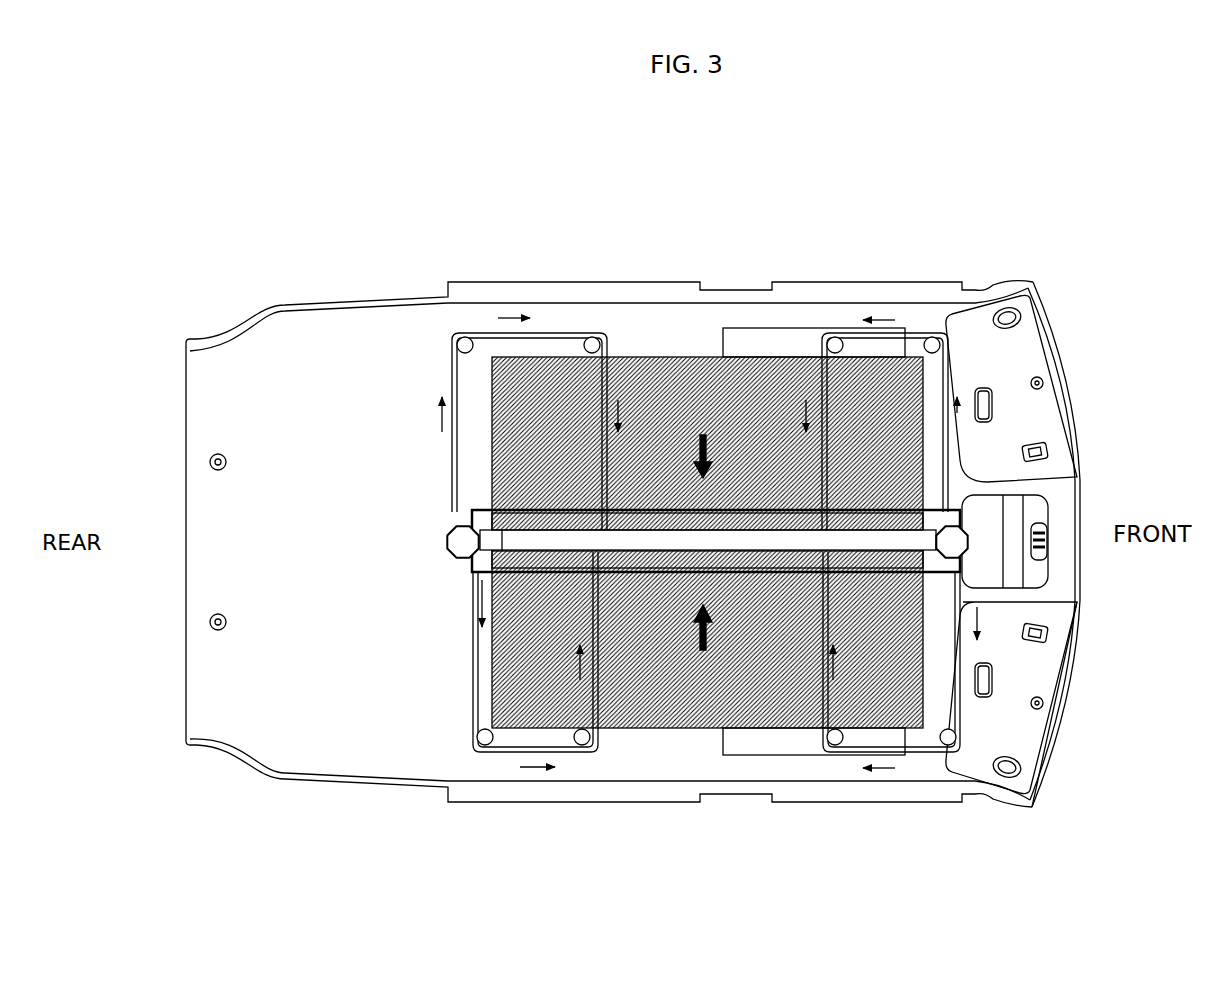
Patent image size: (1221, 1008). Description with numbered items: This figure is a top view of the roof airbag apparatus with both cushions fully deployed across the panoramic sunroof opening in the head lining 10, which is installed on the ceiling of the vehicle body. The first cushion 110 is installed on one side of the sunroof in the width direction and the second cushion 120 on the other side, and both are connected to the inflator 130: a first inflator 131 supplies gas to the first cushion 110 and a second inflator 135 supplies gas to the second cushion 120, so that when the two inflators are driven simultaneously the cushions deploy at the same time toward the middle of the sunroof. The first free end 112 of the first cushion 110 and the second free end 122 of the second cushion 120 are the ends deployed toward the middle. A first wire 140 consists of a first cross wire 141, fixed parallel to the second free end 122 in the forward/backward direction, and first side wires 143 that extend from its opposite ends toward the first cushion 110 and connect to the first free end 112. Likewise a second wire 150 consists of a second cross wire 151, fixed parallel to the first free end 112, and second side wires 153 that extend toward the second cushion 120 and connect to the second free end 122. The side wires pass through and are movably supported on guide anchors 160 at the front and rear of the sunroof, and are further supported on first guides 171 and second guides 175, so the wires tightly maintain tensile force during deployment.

The head lining 10 is at (330, 360).
The first cushion 110 is at (706, 546).
The first free end 112 is at (890, 521).
The second cushion 120 is at (678, 730).
The second free end 122 is at (880, 547).
The inflator 130 is at (814, 286).
The first inflator 131 is at (823, 327).
The second inflator 135 is at (792, 757).
The first wire 140 is at (516, 596).
The first cross wire 141 is at (492, 588).
The first side wires 143 is at (500, 570).
The second wire 150 is at (510, 488).
The second cross wire 151 is at (483, 512).
The second side wires 153 is at (490, 521).
The guide anchors 160 is at (455, 543).
The first guides 171 is at (590, 338).
The second guides 175 is at (580, 745).